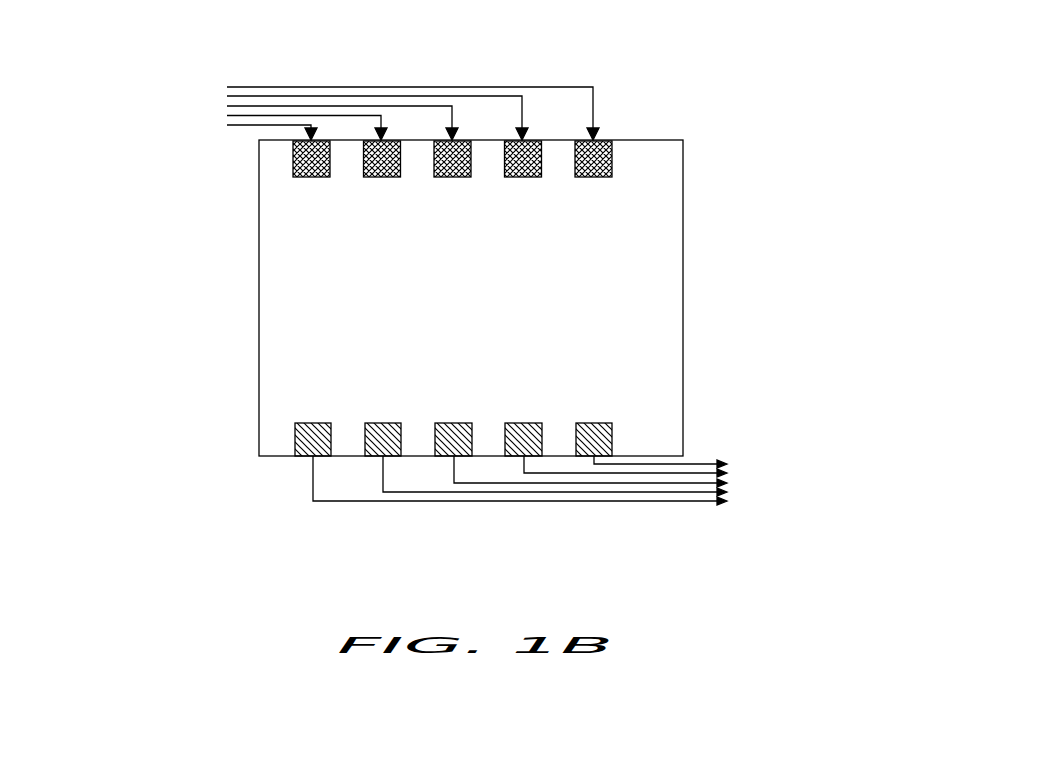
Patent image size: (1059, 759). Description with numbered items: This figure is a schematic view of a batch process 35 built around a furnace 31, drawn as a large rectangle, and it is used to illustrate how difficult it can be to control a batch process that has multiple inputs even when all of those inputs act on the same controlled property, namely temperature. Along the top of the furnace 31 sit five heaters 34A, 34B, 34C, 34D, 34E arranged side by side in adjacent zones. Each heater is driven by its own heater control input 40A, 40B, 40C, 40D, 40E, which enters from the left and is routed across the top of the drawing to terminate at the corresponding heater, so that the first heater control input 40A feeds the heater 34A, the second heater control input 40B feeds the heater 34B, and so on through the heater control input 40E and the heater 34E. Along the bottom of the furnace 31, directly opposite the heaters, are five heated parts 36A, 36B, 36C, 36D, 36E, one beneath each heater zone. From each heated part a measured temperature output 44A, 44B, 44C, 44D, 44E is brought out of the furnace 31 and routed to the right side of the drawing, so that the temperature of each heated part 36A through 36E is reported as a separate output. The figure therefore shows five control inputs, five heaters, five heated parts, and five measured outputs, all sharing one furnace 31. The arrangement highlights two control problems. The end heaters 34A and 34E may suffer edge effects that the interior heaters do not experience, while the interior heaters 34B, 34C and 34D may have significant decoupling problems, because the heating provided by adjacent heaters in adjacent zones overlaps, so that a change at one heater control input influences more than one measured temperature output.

The furnace 31 is at (683, 263).
The batch process 35 is at (672, 100).
The heater 34A is at (316, 177).
The heater 34B is at (387, 177).
The heater 34C is at (447, 177).
The heater 34D is at (517, 177).
The heater 34E is at (597, 177).
The heater control input 40A is at (227, 87).
The heater control input 40B is at (227, 96).
The heater control input 40C is at (227, 106).
The heater control input 40D is at (227, 116).
The heater control input 40E is at (227, 125).
The heated part 36A is at (318, 423).
The heated part 36B is at (390, 423).
The heated part 36C is at (463, 423).
The heated part 36D is at (528, 423).
The heated part 36E is at (600, 423).
The measured temperature output 44A is at (727, 464).
The measured temperature output 44B is at (727, 473).
The measured temperature output 44C is at (727, 483).
The measured temperature output 44D is at (727, 492).
The measured temperature output 44E is at (727, 501).